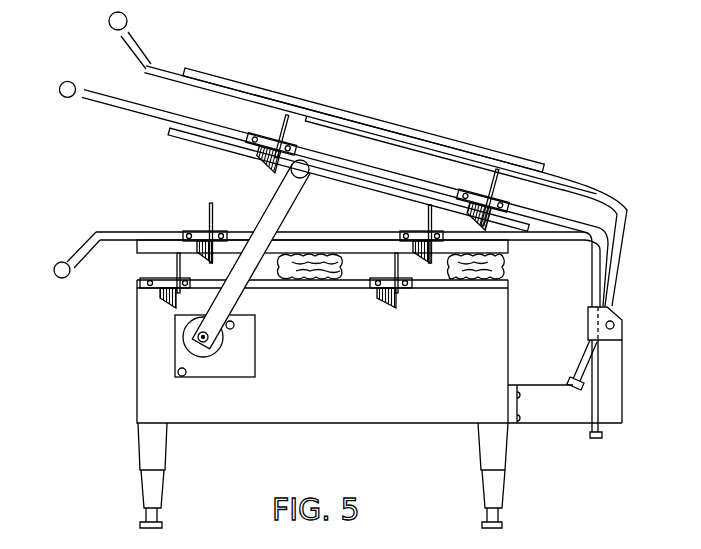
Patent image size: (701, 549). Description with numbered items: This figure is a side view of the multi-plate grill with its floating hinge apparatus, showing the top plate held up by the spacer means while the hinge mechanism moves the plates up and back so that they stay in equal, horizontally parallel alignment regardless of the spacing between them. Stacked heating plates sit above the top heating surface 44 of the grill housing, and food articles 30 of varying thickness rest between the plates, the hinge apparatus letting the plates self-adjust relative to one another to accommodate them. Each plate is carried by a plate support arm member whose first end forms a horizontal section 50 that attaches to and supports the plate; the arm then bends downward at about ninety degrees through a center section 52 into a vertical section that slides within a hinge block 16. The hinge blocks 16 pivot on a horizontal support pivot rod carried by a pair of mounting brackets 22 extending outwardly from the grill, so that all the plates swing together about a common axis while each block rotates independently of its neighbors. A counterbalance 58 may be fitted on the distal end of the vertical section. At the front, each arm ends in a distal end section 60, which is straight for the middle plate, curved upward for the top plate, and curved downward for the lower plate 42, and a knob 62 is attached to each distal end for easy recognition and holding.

The hinge block 16 is at (608, 336).
The mounting bracket 22 is at (611, 402).
The food article 30 is at (312, 278).
The lower plate 42 is at (147, 253).
The top heating surface 44 is at (288, 216).
The horizontal section 50 is at (162, 231).
The center section 52 is at (628, 207).
The counterbalance 58 is at (597, 440).
The distal end section 60 is at (90, 236).
The knob 62 is at (56, 266).